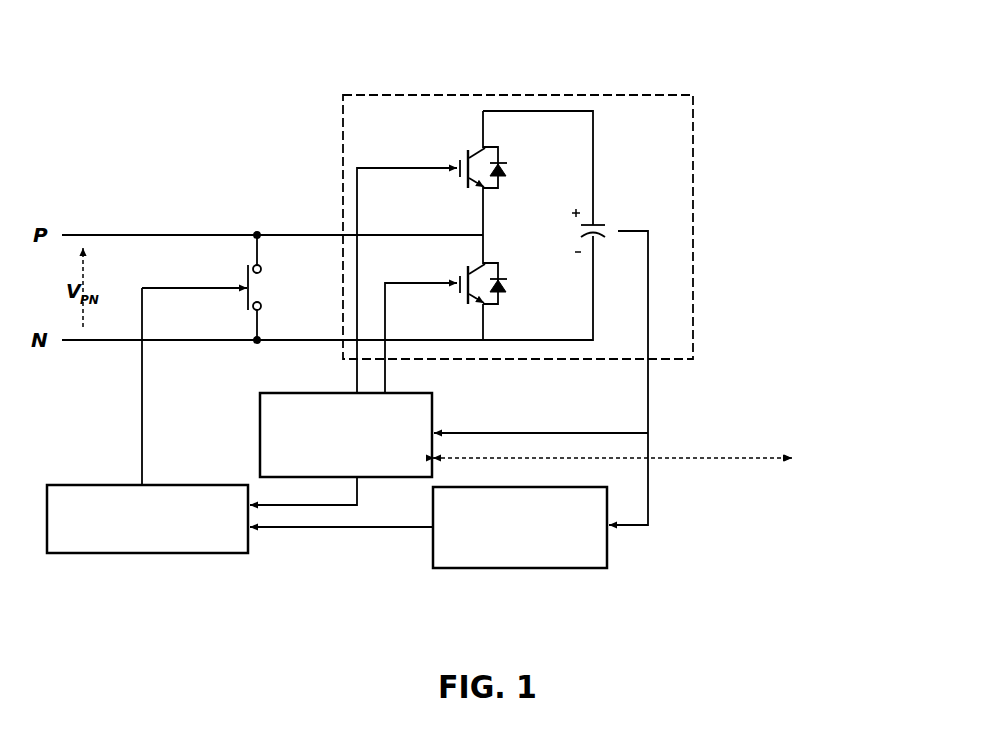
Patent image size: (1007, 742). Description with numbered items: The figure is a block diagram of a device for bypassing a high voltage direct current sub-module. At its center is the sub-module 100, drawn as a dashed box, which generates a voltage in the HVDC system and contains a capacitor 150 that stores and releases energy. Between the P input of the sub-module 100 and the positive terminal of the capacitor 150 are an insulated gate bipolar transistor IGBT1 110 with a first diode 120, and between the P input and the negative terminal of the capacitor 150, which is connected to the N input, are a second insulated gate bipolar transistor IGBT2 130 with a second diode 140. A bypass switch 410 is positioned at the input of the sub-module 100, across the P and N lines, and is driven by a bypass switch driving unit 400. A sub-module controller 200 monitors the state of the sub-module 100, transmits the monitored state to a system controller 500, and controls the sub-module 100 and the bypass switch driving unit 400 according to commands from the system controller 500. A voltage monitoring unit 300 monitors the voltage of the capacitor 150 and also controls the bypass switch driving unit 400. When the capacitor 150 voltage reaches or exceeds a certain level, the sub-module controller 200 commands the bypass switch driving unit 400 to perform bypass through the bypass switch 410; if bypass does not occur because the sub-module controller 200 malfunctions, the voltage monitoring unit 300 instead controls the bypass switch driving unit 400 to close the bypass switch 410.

The sub-module 100 is at (572, 232).
The insulated gate bipolar transistor1 (IGBT1) 110 is at (475, 147).
The first diode 120 is at (512, 168).
The insulated gate bipolar transistor2 (IGBT2) 130 is at (467, 310).
The second diode 140 is at (512, 285).
The capacitor 150 is at (613, 222).
The sub-module controller 200 is at (365, 477).
The voltage monitoring unit 300 is at (530, 568).
The bypass switch driving unit 400 is at (140, 553).
The bypass switch 410 is at (247, 272).
The system controller 500 is at (875, 487).